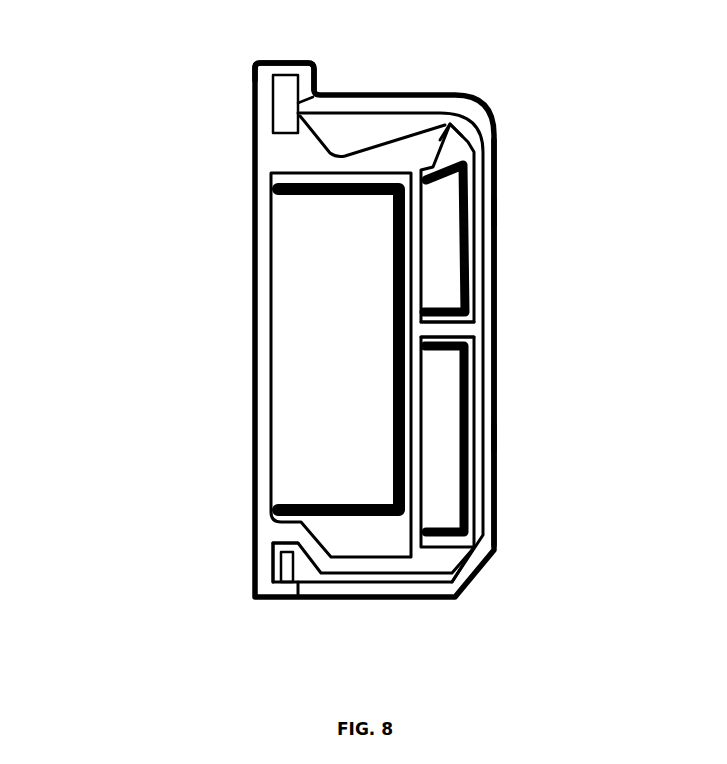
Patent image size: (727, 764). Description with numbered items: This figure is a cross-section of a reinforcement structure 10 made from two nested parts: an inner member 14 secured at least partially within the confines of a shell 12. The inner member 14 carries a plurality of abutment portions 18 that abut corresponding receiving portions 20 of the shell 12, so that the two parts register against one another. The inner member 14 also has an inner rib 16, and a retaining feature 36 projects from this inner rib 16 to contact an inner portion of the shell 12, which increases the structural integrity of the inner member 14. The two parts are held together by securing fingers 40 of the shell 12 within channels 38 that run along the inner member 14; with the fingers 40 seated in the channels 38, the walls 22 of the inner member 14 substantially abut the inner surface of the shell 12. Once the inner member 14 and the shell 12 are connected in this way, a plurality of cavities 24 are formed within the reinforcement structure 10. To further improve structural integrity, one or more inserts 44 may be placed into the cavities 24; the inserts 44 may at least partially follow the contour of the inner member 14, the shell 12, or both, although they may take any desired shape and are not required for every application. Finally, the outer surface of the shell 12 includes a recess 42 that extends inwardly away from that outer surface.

The reinforcement structure 10 is at (128, 80).
The shell 12 is at (501, 313).
The inner member 14 is at (243, 355).
The inner rib 16 is at (399, 393).
The abutment portions 18 is at (443, 130).
The receiving portions 20 is at (455, 132).
The walls 22 is at (383, 167).
The cavities 24 is at (391, 283).
The retaining feature 36 is at (475, 330).
The channels 38 is at (272, 103).
The fingers 40 is at (287, 73).
The recess 42 is at (494, 213).
The inserts 44 is at (321, 195).